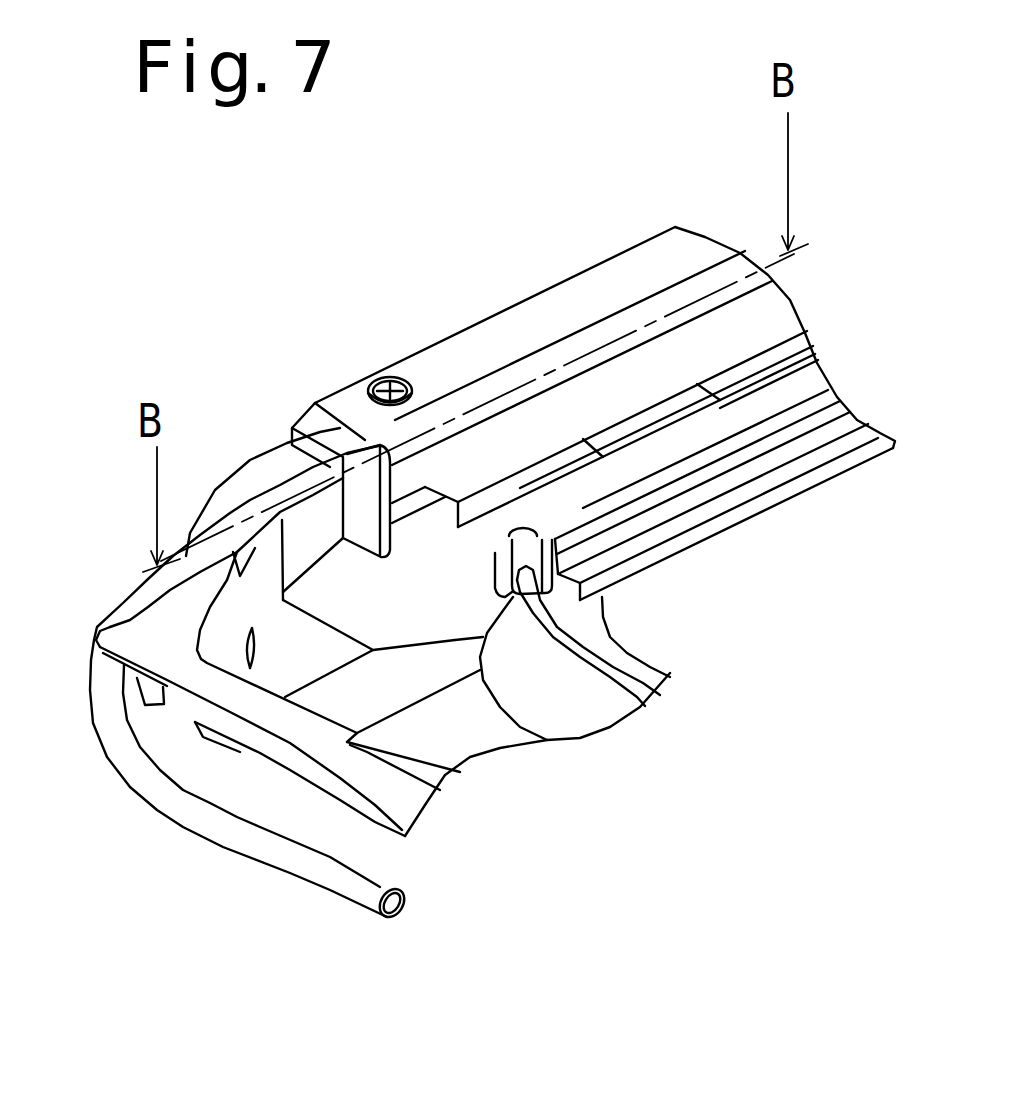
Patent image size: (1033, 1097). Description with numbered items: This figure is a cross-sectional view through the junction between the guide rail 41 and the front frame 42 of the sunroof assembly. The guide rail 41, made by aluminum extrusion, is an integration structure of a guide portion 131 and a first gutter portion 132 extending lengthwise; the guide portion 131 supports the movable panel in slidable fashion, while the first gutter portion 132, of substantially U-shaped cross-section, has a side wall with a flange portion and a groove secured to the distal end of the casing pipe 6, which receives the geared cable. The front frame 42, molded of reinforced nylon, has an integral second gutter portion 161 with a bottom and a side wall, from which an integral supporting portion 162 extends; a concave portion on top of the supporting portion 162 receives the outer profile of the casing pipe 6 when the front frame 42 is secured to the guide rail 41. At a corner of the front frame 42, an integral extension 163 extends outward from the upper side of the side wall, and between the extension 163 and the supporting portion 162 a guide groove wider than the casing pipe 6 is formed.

The casing pipe 6 is at (249, 684).
The guide rail 41 is at (593, 347).
The front frame 42 is at (643, 634).
The guide portion 131 is at (724, 495).
The first gutter portion 132 is at (605, 381).
The second gutter portion 161 is at (344, 647).
The supporting portion 162 is at (308, 443).
The extension 163 is at (70, 563).